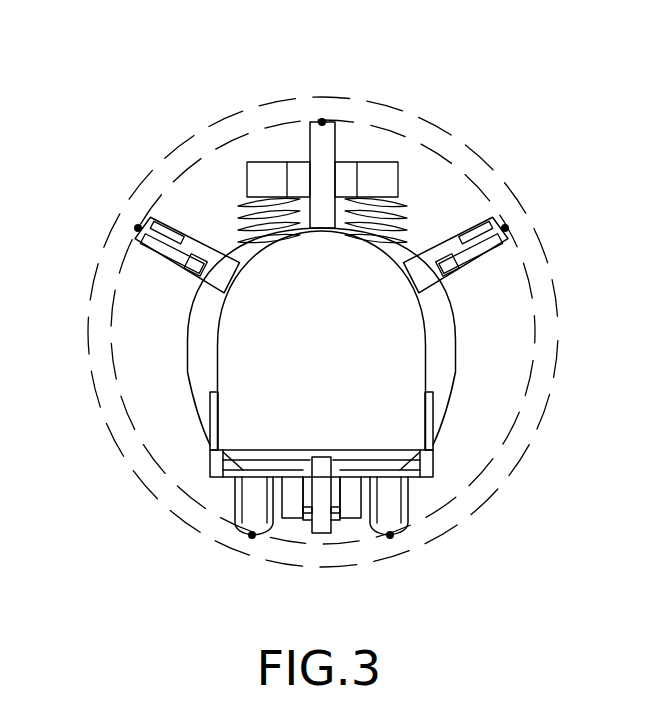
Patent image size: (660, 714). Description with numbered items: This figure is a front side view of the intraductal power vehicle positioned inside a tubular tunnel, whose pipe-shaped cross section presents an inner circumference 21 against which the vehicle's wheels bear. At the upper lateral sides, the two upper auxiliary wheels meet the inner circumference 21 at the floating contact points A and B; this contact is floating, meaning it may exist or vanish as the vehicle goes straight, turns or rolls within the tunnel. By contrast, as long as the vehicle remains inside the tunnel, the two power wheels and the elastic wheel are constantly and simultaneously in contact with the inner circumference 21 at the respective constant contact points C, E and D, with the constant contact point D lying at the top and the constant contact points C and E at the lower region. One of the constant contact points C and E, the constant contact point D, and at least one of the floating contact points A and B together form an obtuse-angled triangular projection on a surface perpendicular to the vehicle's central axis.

The inner circumference 21 is at (524, 316).
The floating contact point A is at (136, 228).
The floating contact point B is at (507, 228).
The constant contact point C is at (252, 538).
The constant contact point D is at (322, 118).
The constant contact point E is at (390, 538).